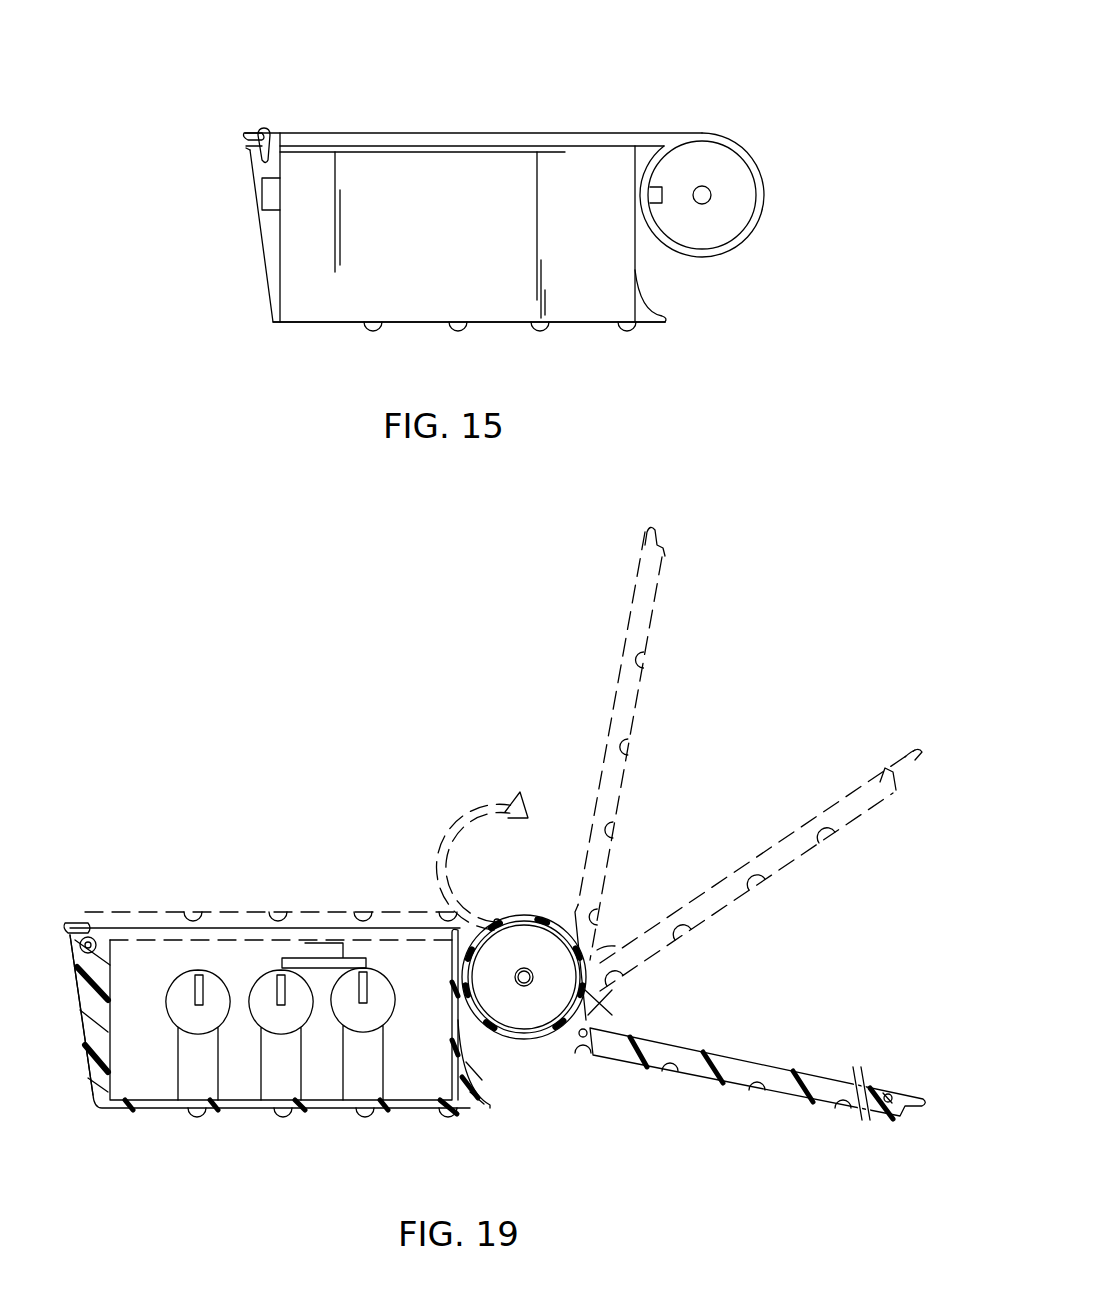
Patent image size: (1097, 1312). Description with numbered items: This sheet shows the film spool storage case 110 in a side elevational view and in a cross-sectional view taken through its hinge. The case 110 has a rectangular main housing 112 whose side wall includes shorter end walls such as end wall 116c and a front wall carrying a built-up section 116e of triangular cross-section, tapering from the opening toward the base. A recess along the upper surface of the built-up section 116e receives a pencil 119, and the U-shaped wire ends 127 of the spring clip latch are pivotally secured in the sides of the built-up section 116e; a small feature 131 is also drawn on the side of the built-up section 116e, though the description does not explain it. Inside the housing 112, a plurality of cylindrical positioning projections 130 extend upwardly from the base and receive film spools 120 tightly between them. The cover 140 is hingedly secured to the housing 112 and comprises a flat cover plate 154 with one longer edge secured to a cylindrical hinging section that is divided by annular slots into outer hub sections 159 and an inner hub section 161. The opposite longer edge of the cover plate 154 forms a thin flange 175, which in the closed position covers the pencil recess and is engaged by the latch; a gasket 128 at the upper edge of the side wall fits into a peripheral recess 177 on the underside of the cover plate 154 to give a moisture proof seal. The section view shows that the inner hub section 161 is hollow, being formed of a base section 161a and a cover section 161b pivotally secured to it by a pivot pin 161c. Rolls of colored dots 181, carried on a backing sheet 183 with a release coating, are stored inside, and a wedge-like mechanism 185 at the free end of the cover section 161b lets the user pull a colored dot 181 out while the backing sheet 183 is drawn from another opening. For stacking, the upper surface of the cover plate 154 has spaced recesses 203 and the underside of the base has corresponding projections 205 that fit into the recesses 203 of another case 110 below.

In FIG. 15, the film spool storage case 110 is at (431, 88).
In FIG. 15, the main housing 112 is at (575, 335).
In FIG. 15, the end wall 116c is at (288, 293).
In FIG. 15, the built-up section 116e is at (252, 172).
In FIG. 19, the built-up section 116e is at (92, 1096).
In FIG. 19, the pencil 119 is at (88, 940).
In FIG. 19, the film spool 120 is at (280, 976).
In FIG. 15, the U-shaped wire end 127 is at (273, 133).
In FIG. 19, the gasket 128 is at (893, 1097).
In FIG. 19, the positioning projection 130 is at (218, 1085).
In FIG. 15, the tab 131 is at (270, 197).
In FIG. 15, the cover 140 is at (617, 112).
In FIG. 15, the flat cover plate 154 is at (533, 132).
In FIG. 19, the flat cover plate 154 is at (167, 910).
In FIG. 15, the outer hub section 159 is at (718, 140).
In FIG. 19, the inner hub section 161 is at (549, 1056).
In FIG. 19, the base section 161a is at (500, 1035).
In FIG. 19, the cover section 161b is at (463, 822).
In FIG. 19, the pivot pin 161c is at (495, 923).
In FIG. 15, the flange 175 is at (250, 132).
In FIG. 19, the flange 175 is at (67, 923).
In FIG. 19, the peripheral recess 177 is at (888, 1095).
In FIG. 19, the colored dot 181 is at (598, 942).
In FIG. 19, the backing sheet 183 is at (610, 1013).
In FIG. 19, the wedge-like mechanism 185 is at (607, 970).
In FIG. 19, the recess 203 is at (202, 915).
In FIG. 15, the projection 205 is at (458, 332).
In FIG. 19, the projection 205 is at (288, 1117).